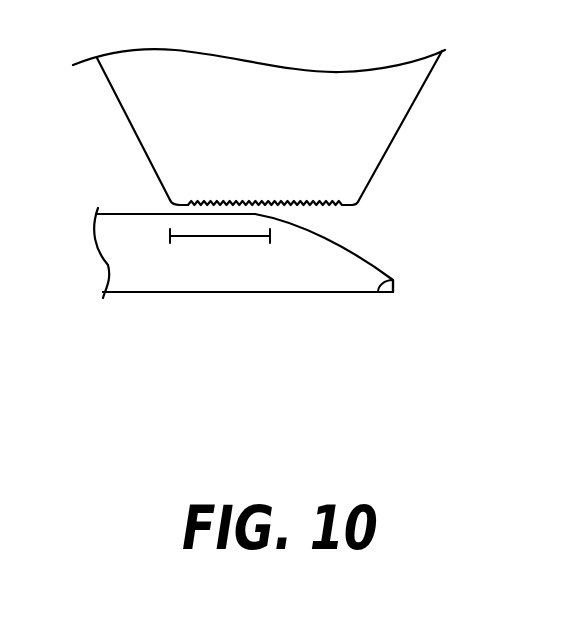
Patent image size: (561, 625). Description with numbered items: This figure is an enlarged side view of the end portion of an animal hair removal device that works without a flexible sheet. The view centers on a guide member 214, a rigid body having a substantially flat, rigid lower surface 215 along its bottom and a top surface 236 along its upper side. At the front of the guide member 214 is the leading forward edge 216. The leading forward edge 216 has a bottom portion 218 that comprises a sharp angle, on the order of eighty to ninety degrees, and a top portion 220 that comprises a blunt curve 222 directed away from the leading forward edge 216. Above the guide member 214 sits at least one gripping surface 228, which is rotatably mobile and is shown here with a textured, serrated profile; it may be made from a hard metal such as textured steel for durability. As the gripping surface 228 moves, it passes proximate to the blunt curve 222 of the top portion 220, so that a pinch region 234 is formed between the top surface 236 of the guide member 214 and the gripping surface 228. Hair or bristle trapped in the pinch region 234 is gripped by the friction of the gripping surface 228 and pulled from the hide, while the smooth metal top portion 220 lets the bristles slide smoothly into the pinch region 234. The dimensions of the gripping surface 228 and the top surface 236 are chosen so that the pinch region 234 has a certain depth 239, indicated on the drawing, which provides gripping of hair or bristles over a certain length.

The guide member 214 is at (139, 310).
The lower surface 215 is at (240, 294).
The leading forward edge 216 is at (369, 304).
The bottom portion 218 is at (385, 293).
The top portion 220 is at (386, 211).
The blunt curve 222 is at (373, 258).
The gripping surface 228 is at (262, 203).
The pinch region 234 is at (306, 215).
The top surface 236 is at (137, 214).
The depth 239 is at (215, 236).